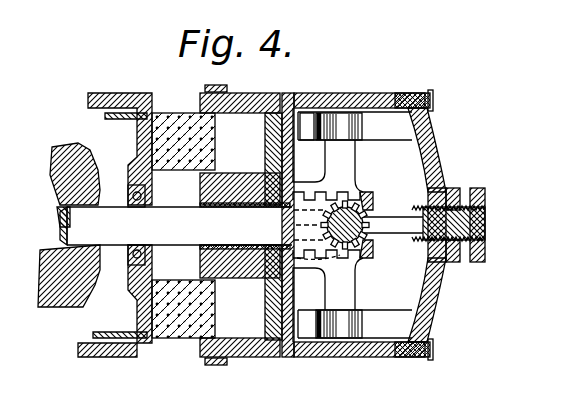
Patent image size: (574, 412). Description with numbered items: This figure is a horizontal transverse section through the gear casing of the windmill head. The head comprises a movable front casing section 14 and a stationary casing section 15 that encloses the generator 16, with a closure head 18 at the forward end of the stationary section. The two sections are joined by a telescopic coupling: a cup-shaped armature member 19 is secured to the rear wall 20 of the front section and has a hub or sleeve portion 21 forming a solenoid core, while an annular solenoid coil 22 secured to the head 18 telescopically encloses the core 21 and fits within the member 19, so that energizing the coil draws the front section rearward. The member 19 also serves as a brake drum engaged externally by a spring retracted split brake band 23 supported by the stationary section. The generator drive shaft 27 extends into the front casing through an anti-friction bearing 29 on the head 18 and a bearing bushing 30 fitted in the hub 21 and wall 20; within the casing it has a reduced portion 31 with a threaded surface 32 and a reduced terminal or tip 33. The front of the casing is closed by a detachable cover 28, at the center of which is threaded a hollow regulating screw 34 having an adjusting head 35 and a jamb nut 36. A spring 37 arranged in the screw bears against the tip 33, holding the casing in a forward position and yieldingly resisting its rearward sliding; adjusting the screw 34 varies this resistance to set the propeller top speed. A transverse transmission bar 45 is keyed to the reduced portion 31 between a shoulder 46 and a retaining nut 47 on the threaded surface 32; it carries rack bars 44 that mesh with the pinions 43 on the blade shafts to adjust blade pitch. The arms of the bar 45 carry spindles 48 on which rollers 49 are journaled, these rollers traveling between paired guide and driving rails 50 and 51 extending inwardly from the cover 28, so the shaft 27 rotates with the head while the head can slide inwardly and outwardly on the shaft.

The movable front casing section 14 is at (382, 93).
The stationary casing section 15 is at (120, 357).
The generator 16 is at (62, 146).
The closure head 18 is at (152, 108).
The cup-shaped armature member 19 is at (238, 93).
The rear wall 20 is at (288, 93).
The hub or sleeve portion 21 is at (200, 190).
The annular solenoid coil 22 is at (195, 340).
The split brake band 23 is at (228, 362).
The generator drive shaft 27 is at (176, 226).
The detachable cover 28 is at (435, 170).
The anti-friction bearing 29 is at (136, 207).
The bearing bushing 30 is at (232, 245).
The reduced portion 31 is at (297, 232).
The threaded surface 32 is at (370, 236).
The reduced terminal or tip 33 is at (399, 217).
The hollow regulating screw 34 is at (458, 190).
The adjusting head 35 is at (485, 202).
The jamb nut 36 is at (452, 262).
The spring 37 is at (480, 226).
The spur gears or pinions 43 is at (365, 258).
The rack bars 44 is at (318, 184).
The transmission bar 45 is at (345, 225).
The shoulder 46 is at (285, 210).
The retaining nut 47 is at (368, 193).
The spindles 48 is at (352, 93).
The rollers 49 is at (362, 133).
The guide and driving rails 50 is at (318, 110).
The guide and driving rails 51 is at (398, 350).